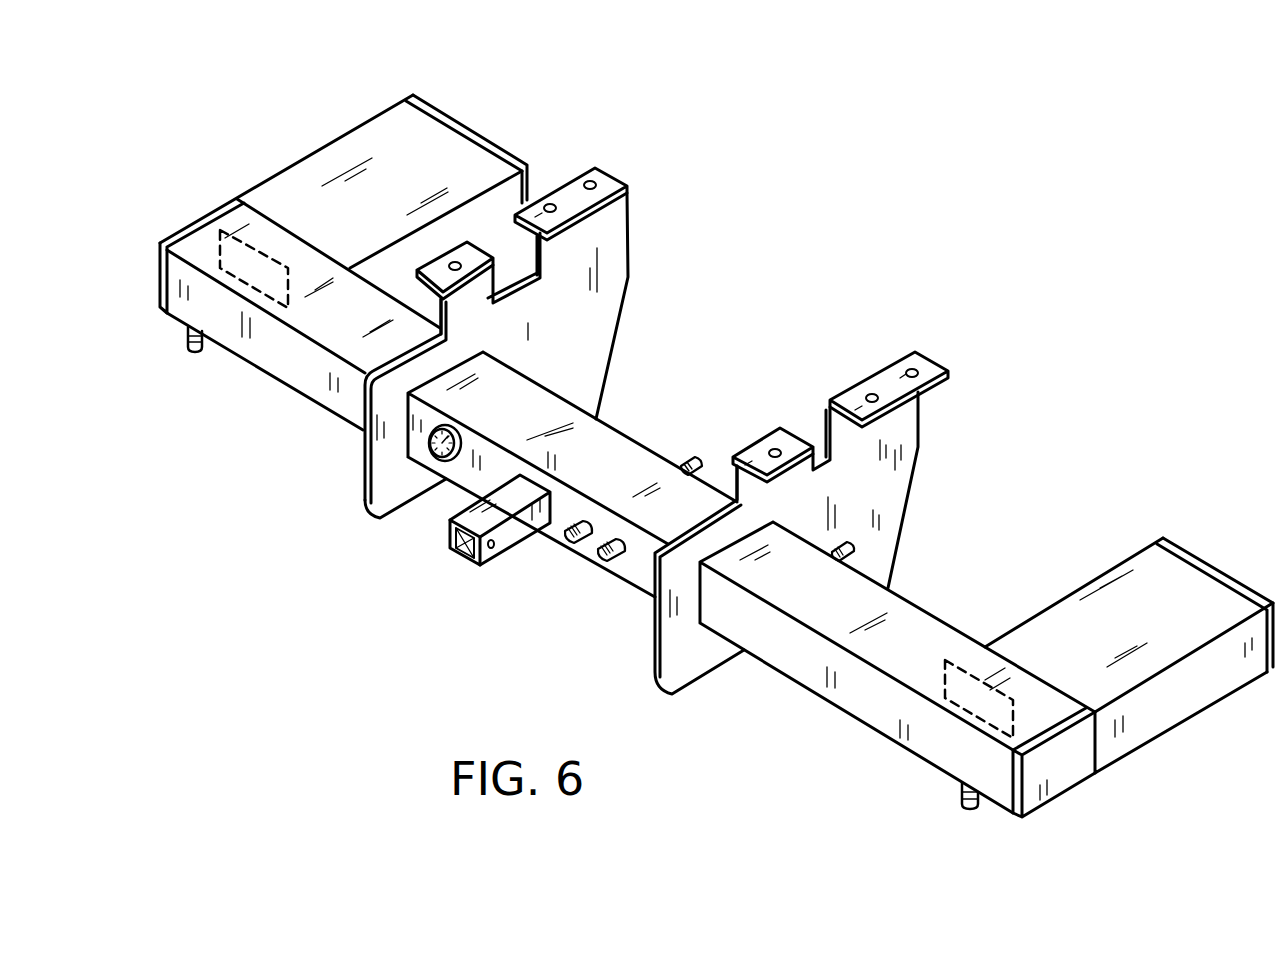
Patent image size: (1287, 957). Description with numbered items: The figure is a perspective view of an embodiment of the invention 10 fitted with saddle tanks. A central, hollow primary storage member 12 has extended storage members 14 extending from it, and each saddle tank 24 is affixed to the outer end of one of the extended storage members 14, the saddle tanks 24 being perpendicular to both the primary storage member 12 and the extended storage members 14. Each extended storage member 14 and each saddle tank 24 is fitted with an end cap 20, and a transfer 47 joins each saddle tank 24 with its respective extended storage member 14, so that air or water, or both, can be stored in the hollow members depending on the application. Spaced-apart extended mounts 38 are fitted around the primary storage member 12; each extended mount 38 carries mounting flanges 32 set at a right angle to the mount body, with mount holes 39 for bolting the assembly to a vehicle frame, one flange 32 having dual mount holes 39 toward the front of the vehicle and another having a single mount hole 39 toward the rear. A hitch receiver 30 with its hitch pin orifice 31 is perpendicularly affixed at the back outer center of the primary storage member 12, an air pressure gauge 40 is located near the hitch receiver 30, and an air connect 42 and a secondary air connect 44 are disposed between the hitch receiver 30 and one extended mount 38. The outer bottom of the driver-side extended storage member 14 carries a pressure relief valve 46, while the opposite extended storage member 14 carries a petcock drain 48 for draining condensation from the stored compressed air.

The invention 10 is at (856, 166).
The primary storage member 12 is at (627, 586).
The extended storage member 14 is at (288, 380).
The end cap 20 is at (451, 116).
The saddle tank 24 is at (352, 131).
The hitch receiver 30 is at (474, 564).
The hitch pin orifice 31 is at (492, 550).
The mounting flange 32 is at (412, 262).
The extended mount 38 is at (632, 272).
The mount hole 39 is at (552, 206).
The air pressure gauge 40 is at (440, 460).
The air connect 42 is at (686, 460).
The secondary air connect 44 is at (600, 565).
The pressure relief valve 46 is at (193, 352).
The transfer 47 is at (190, 254).
The petcock drain 48 is at (960, 815).